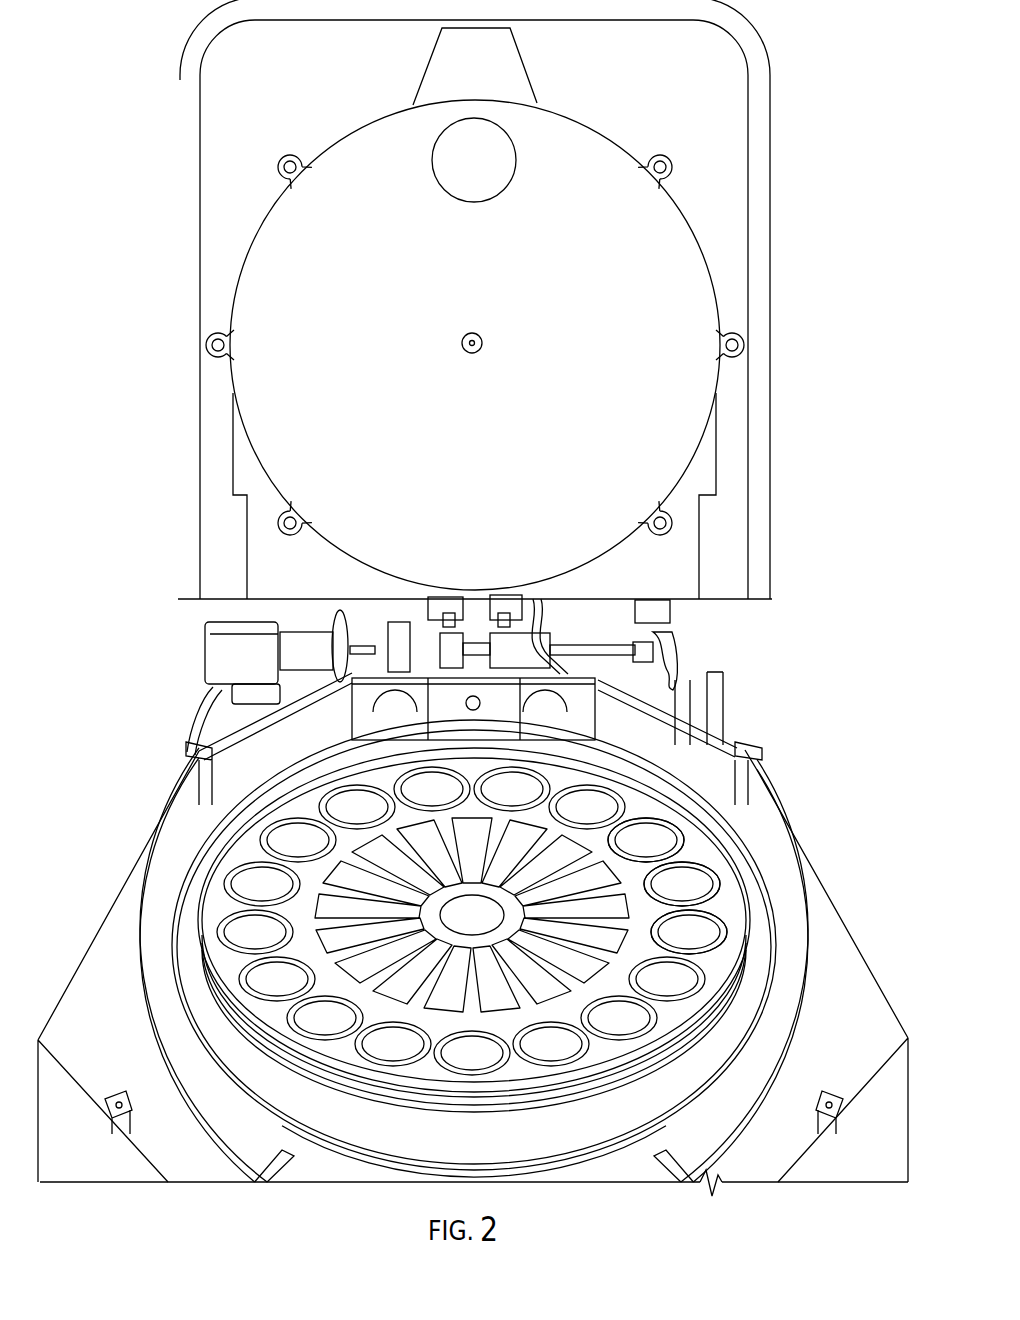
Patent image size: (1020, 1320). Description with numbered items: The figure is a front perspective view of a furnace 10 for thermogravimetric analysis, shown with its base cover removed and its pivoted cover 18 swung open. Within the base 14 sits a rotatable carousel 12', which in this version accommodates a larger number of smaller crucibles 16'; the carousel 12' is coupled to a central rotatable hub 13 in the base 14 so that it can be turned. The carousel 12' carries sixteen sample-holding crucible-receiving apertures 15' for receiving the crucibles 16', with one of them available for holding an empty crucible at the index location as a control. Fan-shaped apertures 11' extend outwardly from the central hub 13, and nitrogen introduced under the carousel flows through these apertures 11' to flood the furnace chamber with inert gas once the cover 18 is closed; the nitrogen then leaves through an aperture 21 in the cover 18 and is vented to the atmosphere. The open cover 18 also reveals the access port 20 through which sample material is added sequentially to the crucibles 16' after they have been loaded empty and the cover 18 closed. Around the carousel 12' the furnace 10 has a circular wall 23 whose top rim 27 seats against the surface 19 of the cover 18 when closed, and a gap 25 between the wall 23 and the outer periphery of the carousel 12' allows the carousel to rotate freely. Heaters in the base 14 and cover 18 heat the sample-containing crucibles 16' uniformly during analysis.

The furnace 10 is at (798, 568).
The fan-shaped apertures 11' is at (472, 982).
The carousel 12' is at (509, 875).
The rotatable hub 13 is at (458, 912).
The base 14 is at (803, 840).
The crucible-receiving apertures 15' is at (752, 841).
The crucibles 16' is at (472, 921).
The pivoted cover 18 is at (775, 353).
The surface 19 is at (380, 281).
The access port 20 is at (516, 192).
The aperture 21 is at (472, 347).
The circular wall 23 is at (750, 1036).
The gap 25 is at (640, 1062).
The top rim 27 is at (758, 998).